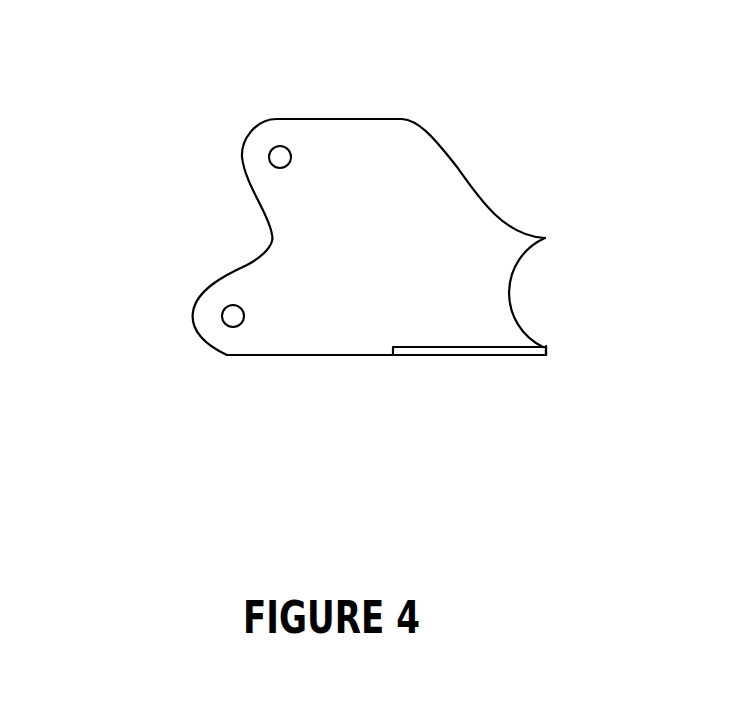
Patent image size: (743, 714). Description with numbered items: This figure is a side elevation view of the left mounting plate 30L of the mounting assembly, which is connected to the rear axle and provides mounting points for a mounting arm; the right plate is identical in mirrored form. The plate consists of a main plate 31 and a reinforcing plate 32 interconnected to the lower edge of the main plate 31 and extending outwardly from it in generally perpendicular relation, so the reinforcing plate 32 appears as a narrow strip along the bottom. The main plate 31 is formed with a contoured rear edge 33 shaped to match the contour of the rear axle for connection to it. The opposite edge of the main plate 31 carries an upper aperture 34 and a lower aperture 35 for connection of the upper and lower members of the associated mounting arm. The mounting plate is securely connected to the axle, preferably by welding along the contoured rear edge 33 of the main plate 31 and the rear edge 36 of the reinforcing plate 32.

The left mounting plate 30L is at (428, 108).
The main plate 31 is at (430, 232).
The reinforcing plate 32 is at (425, 350).
The contoured rear edge 33 is at (510, 292).
The upper aperture 34 is at (280, 158).
The lower aperture 35 is at (233, 327).
The rear edge of the reinforcing plate 36 is at (543, 348).